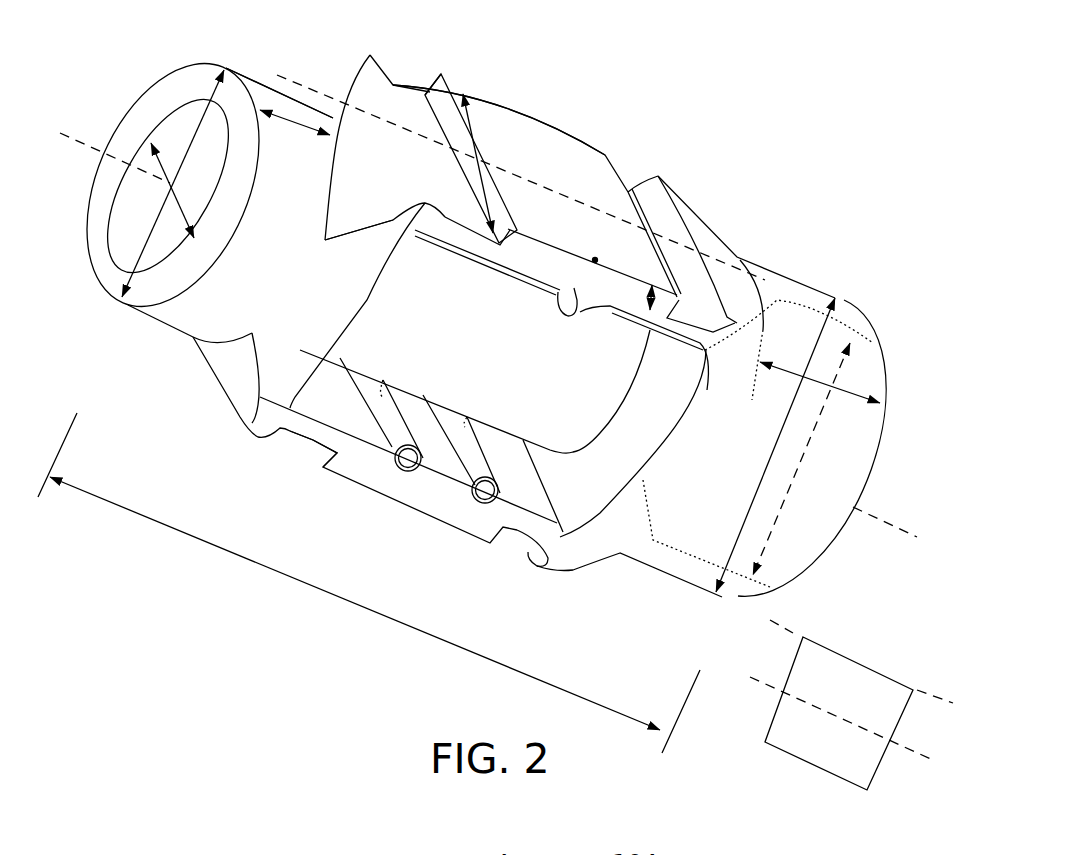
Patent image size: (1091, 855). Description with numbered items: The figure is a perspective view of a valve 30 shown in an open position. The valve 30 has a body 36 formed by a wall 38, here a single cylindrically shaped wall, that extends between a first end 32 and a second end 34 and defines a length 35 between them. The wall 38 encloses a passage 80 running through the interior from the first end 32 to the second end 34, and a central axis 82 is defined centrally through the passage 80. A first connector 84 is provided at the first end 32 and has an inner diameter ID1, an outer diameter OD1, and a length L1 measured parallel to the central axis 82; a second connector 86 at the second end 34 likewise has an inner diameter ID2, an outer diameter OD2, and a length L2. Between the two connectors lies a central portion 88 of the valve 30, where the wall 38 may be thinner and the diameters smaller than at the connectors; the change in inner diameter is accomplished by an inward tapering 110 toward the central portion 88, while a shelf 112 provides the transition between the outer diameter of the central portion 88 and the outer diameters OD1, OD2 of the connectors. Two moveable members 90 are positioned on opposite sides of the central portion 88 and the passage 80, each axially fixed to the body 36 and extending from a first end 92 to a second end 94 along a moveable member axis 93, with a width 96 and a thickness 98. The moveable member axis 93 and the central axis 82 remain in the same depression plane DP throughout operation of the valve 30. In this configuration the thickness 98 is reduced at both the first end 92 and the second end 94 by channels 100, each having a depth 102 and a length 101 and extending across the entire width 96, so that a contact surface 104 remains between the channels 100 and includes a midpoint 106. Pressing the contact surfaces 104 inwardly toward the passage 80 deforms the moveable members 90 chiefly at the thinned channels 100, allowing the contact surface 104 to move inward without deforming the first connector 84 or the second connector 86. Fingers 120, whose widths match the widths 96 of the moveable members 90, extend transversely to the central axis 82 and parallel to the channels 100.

The valve 30 is at (788, 80).
The first end 32 is at (100, 46).
The second end 34 is at (907, 350).
The length 35 is at (323, 593).
The body 36 is at (277, 322).
The walls 38 is at (341, 355).
The passage 80 is at (133, 257).
The central axis 82 is at (893, 527).
The first connector 84 is at (283, 37).
The second connector 86 is at (843, 213).
The central portion 88 is at (452, 304).
The moveable members 90 is at (500, 100).
The first end 92 is at (360, 53).
The moveable member axis 93 is at (707, 253).
The second end 94 is at (652, 168).
The width 96 is at (473, 72).
The thickness 98 is at (643, 292).
The channels 100 is at (400, 73).
The length 101 is at (448, 216).
The depth 102 is at (426, 92).
The contact surface 104 is at (543, 148).
The midpoint 106 is at (595, 260).
The inward tapering 110 is at (640, 500).
The shelf 112 is at (587, 497).
The fingers 120 is at (570, 315).
The outer diameter OD1 is at (197, 127).
The inner diameter ID1 is at (200, 112).
The length L1 is at (300, 127).
The outer diameter OD2 is at (822, 295).
The inner diameter ID2 is at (850, 350).
The length L2 is at (855, 400).
The depression plane DP is at (853, 770).